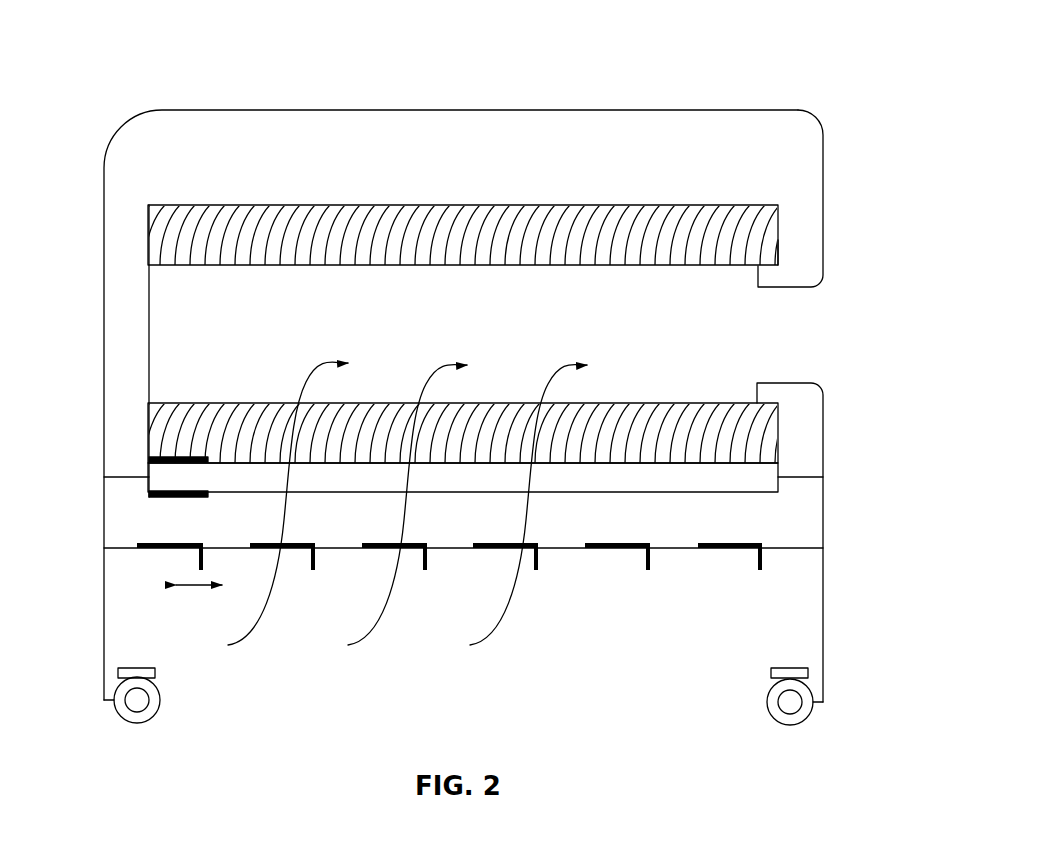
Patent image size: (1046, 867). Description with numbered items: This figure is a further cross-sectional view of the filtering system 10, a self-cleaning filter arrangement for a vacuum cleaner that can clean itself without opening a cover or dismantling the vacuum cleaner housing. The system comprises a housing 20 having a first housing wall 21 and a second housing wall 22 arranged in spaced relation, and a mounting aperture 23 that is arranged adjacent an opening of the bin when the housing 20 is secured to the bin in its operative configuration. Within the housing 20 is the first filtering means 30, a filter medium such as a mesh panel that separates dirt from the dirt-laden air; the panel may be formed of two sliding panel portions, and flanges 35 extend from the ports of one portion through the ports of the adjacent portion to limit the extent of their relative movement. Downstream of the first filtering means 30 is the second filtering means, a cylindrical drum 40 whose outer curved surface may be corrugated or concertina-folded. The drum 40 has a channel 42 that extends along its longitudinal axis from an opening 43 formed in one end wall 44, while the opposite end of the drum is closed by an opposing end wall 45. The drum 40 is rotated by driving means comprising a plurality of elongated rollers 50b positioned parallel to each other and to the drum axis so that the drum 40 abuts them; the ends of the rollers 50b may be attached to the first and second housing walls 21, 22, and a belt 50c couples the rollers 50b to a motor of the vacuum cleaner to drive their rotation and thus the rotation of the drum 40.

The filtering system 10 is at (799, 57).
The housing 20 is at (248, 110).
The first housing wall 21 is at (823, 198).
The second housing wall 22 is at (104, 260).
The mounting aperture 23 is at (452, 603).
The first filtering means 30 is at (724, 588).
The flanges 35 is at (317, 556).
The cylindrical drum 40 is at (570, 203).
The channel 42 is at (485, 351).
The opening 43 is at (790, 334).
The end wall 44 is at (778, 255).
The opposing end wall 45 is at (149, 347).
The elongated rollers 50b is at (155, 470).
The belt 50c is at (180, 498).